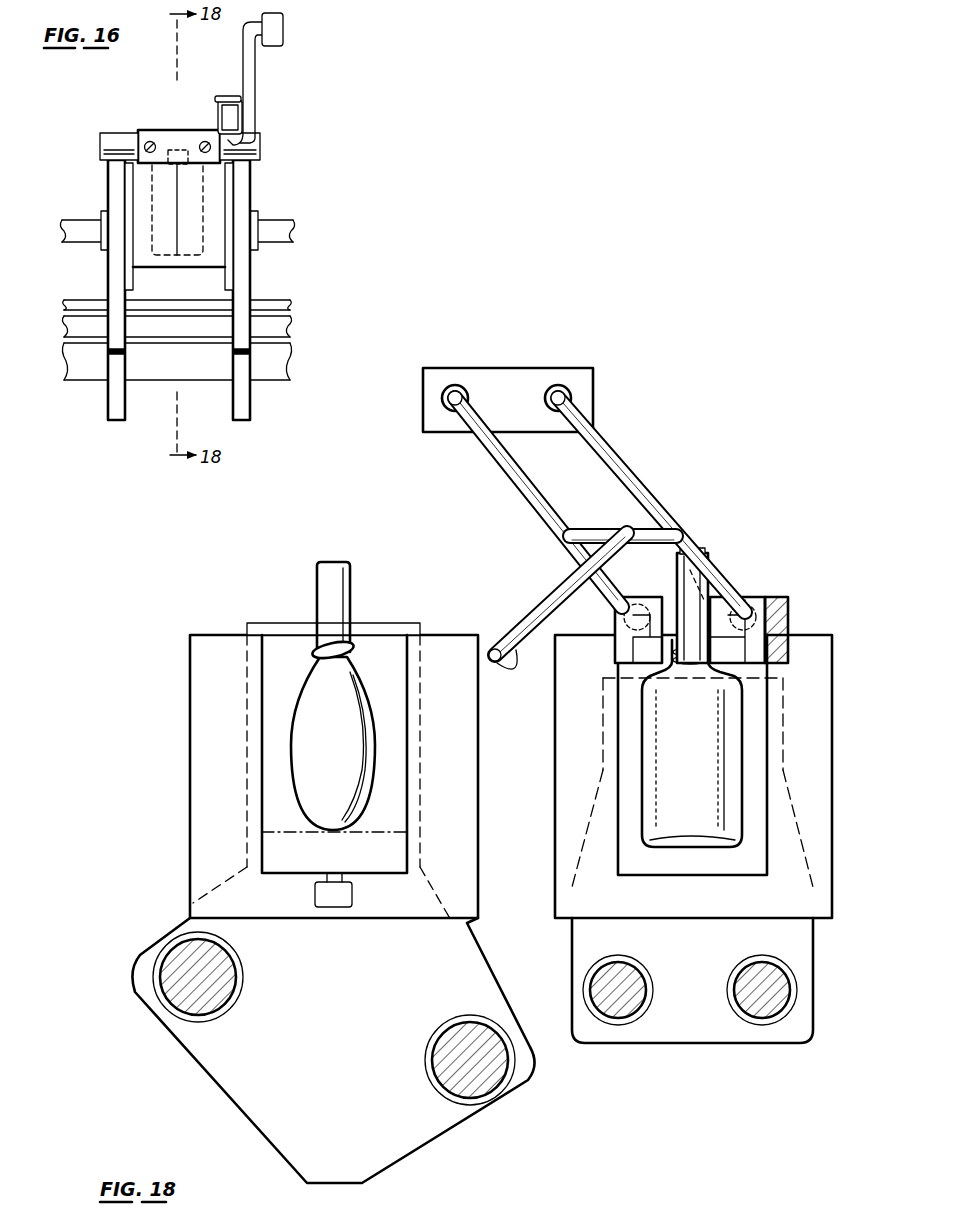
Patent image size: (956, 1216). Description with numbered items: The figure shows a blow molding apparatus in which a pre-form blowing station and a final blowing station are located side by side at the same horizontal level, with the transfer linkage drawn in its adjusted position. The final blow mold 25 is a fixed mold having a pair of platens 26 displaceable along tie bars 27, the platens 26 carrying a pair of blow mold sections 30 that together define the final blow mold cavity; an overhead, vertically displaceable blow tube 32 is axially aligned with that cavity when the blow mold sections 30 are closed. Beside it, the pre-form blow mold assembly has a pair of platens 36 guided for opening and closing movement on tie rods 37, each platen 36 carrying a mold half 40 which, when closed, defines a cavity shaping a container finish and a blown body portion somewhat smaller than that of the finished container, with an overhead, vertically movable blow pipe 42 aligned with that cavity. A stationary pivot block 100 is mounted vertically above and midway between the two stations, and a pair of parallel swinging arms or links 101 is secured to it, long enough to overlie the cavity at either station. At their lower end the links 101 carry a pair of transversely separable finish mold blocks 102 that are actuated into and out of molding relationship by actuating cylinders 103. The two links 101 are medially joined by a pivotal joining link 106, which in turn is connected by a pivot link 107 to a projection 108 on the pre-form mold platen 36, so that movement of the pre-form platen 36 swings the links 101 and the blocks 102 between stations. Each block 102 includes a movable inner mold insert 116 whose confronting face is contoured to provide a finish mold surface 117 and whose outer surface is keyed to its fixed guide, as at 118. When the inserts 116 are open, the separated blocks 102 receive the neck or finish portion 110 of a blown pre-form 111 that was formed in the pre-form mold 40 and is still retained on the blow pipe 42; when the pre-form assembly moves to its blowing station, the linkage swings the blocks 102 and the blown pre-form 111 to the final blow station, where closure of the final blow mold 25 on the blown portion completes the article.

In FIG. 18, the final blow mold 25 is at (764, 528).
In FIG. 16, the platens 26 is at (110, 275).
In FIG. 18, the platens 26 is at (562, 819).
In FIG. 16, the tie bars 27 is at (75, 326).
In FIG. 18, the tie bars 27 is at (745, 990).
In FIG. 16, the blow mold sections 30 is at (205, 258).
In FIG. 18, the blow tube 32 is at (694, 548).
In FIG. 18, the platens 36 is at (465, 780).
In FIG. 16, the tie rods 37 is at (68, 306).
In FIG. 18, the tie rods 37 is at (233, 990).
In FIG. 18, the mold half 40 is at (376, 640).
In FIG. 18, the blow pipe 42 is at (318, 582).
In FIG. 16, the stationary pivot block 100 is at (288, 22).
In FIG. 18, the stationary pivot block 100 is at (545, 366).
In FIG. 16, the swinging arms or links 101 is at (258, 110).
In FIG. 18, the swinging arms or links 101 is at (490, 465).
In FIG. 18, the finish mold blocks 102 is at (653, 600).
In FIG. 16, the actuating cylinders 103 is at (100, 153).
In FIG. 16, the pivotal joining link 106 is at (232, 97).
In FIG. 18, the pivotal joining link 106 is at (597, 530).
In FIG. 16, the pivot link 107 is at (218, 112).
In FIG. 18, the pivot link 107 is at (545, 605).
In FIG. 18, the projection 108 is at (783, 662).
In FIG. 18, the neck or finish portion 110 is at (325, 652).
In FIG. 18, the blown pre-form 111 is at (330, 746).
In FIG. 18, the movable inner mold insert 116 is at (776, 612).
In FIG. 18, the finish mold surfaces 117 is at (680, 648).
In FIG. 18, the key 118 is at (745, 600).